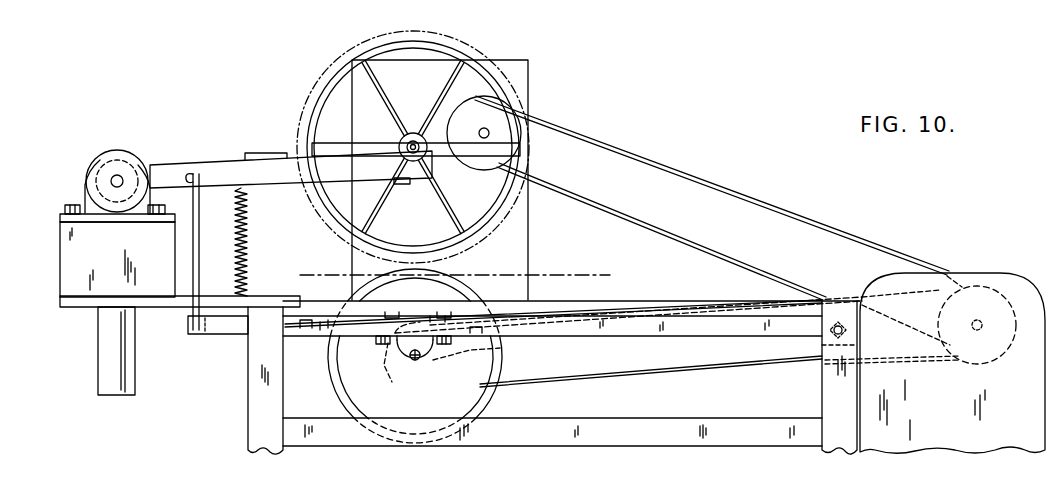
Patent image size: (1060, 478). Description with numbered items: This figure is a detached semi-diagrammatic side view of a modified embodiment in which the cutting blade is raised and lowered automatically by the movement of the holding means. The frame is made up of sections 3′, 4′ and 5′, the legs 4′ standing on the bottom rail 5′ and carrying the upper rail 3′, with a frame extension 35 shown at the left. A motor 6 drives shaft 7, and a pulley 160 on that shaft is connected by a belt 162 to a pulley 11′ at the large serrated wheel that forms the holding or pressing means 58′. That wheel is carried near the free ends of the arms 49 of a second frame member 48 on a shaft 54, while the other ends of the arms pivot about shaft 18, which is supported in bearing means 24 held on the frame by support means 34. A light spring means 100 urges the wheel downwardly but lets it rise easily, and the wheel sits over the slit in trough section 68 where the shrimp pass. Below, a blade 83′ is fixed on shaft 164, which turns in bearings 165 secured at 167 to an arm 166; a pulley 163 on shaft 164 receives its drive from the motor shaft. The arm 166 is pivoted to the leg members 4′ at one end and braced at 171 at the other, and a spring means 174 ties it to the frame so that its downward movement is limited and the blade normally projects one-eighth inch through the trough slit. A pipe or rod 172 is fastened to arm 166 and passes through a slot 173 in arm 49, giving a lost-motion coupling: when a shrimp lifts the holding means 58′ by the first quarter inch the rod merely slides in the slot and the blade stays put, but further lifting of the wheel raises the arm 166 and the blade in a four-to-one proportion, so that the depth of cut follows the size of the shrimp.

The shaft 18 is at (111, 181).
The bearing means 24 is at (131, 158).
The slot 173 is at (190, 170).
The second frame member 48 is at (238, 157).
The shaft 54 is at (403, 143).
The holding or pressing means 58' is at (432, 147).
The pulley 11' is at (515, 287).
The belt 162 is at (775, 209).
The arms 49 is at (288, 180).
The bearing support means 34 is at (60, 250).
The pipe or rod 172 is at (197, 263).
The spring means 100 is at (242, 254).
The trough section 68 is at (548, 272).
The spring means 174 is at (466, 319).
The frame section 3' is at (571, 306).
The frame extension 35 is at (106, 350).
The brace 171 is at (200, 338).
The leg members 4' is at (532, 377).
The arm 166 is at (627, 332).
The securing means 167 is at (389, 345).
The shaft 164 is at (421, 355).
The bearings 165 is at (398, 362).
The pulley 163 is at (400, 386).
The blade 83' is at (431, 356).
The frame section 5' is at (552, 448).
The shaft 7 is at (984, 325).
The motor 6 is at (910, 440).
The pulley 160 is at (1003, 474).